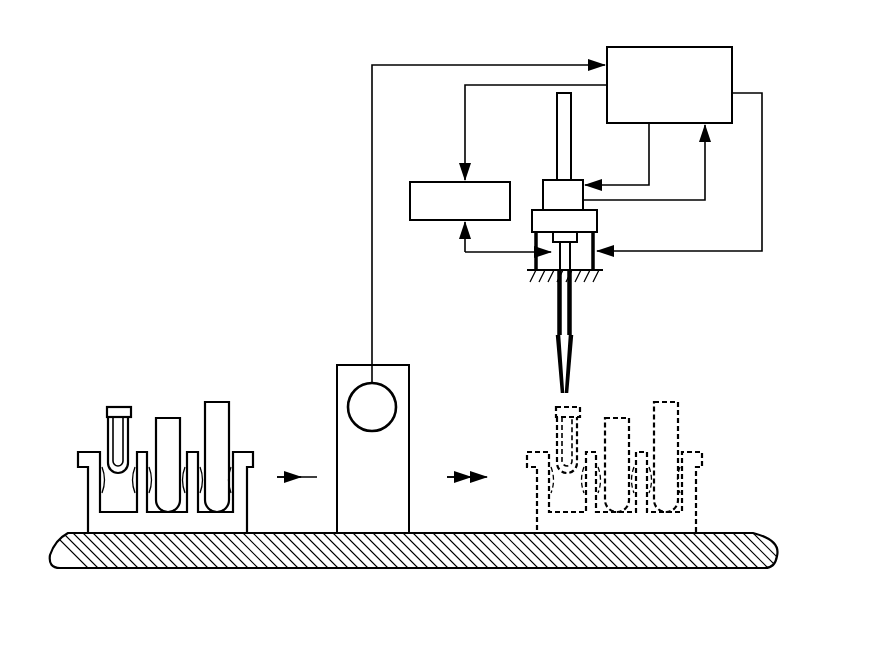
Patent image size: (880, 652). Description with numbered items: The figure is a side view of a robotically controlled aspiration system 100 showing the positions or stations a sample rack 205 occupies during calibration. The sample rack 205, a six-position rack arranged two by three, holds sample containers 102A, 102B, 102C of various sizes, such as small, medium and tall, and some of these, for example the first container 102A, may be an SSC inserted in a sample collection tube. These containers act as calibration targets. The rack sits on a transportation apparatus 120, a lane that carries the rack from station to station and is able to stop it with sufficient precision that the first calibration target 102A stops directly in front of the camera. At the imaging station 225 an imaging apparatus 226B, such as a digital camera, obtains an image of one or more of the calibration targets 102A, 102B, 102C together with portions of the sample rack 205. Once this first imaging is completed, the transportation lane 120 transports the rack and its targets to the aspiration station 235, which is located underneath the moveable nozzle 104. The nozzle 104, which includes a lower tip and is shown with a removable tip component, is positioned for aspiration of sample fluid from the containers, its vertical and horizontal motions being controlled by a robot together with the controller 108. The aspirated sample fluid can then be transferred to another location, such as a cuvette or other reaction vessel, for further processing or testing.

The aspiration system 100 is at (292, 181).
The sample container 102A is at (113, 406).
The sample container 102B is at (168, 418).
The sample container 102C is at (217, 402).
The nozzle 104 is at (577, 341).
The controller 108 is at (683, 47).
The transportation apparatus 120 is at (713, 531).
The sample rack 205 is at (87, 495).
The imaging station 225 is at (327, 393).
The imaging apparatus 226B is at (348, 365).
The aspiration station 235 is at (617, 380).